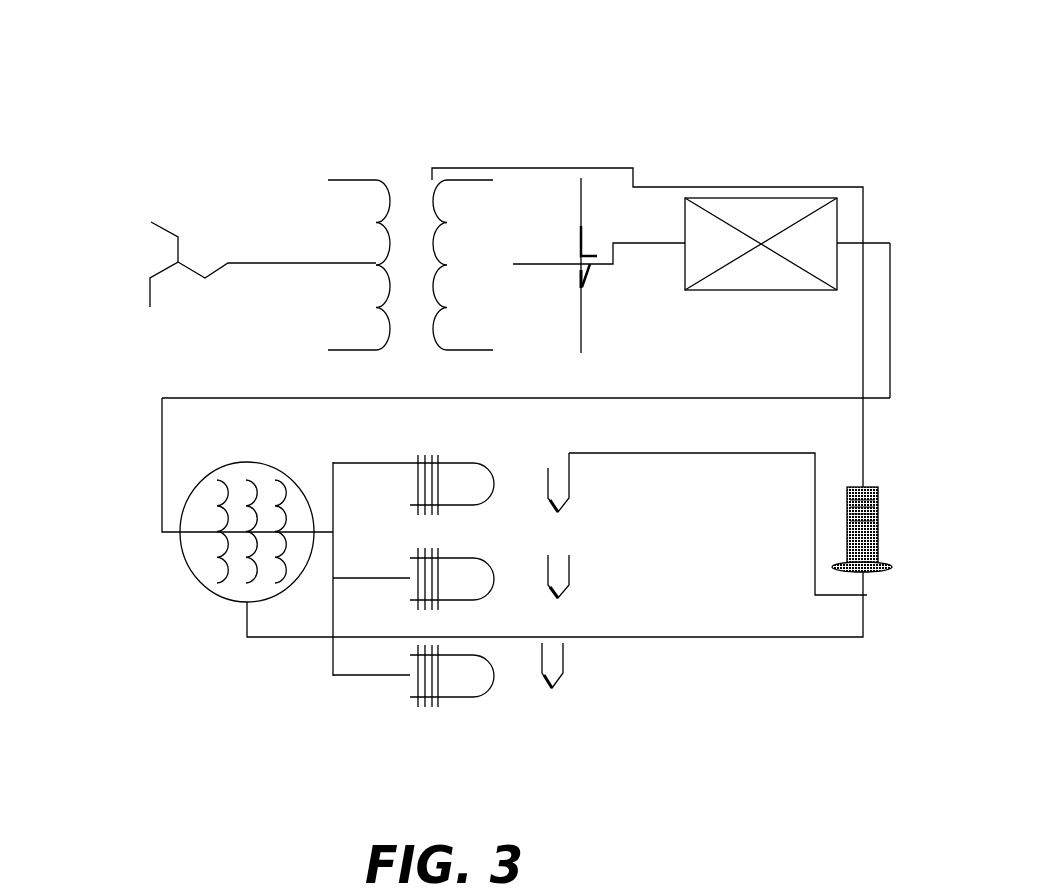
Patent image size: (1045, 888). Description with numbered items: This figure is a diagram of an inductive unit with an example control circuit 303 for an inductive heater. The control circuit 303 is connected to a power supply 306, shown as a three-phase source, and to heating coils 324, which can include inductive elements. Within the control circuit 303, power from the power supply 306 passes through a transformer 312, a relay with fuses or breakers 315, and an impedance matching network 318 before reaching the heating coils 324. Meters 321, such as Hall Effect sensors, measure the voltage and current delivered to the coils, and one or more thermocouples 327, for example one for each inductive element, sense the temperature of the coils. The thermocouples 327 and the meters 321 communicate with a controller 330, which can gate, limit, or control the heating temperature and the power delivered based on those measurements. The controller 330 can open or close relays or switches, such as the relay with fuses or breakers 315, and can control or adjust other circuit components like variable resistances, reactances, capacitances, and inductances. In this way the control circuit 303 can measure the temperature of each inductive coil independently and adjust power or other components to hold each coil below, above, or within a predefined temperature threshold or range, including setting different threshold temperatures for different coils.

The control circuit 303 is at (178, 63).
The power supply 306 is at (181, 237).
The transformer 312 is at (423, 195).
The relay with fuses or breakers 315 is at (588, 233).
The impedance matching network 318 is at (738, 260).
The meters 321 is at (195, 577).
The heating coils 324 is at (457, 682).
The thermocouples 327 is at (560, 512).
The controller 330 is at (862, 595).